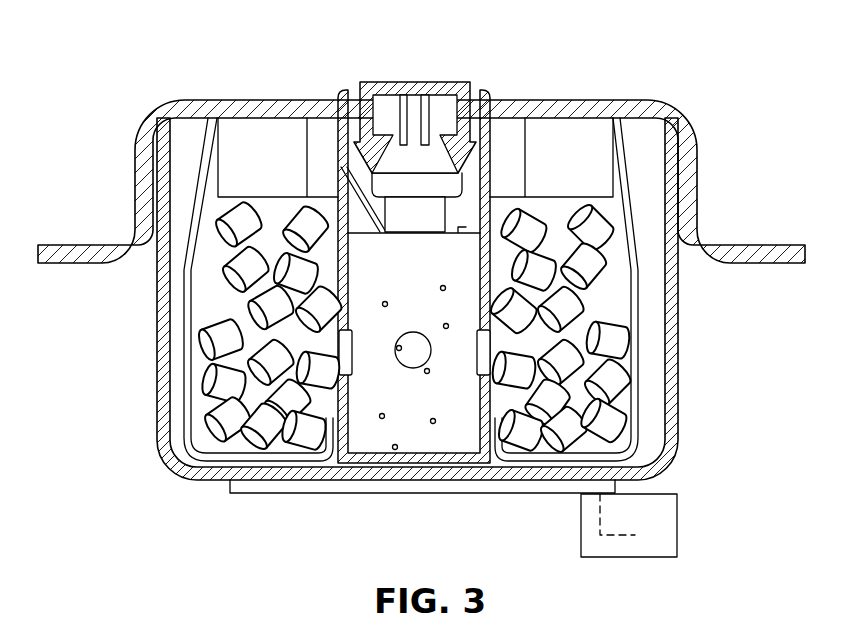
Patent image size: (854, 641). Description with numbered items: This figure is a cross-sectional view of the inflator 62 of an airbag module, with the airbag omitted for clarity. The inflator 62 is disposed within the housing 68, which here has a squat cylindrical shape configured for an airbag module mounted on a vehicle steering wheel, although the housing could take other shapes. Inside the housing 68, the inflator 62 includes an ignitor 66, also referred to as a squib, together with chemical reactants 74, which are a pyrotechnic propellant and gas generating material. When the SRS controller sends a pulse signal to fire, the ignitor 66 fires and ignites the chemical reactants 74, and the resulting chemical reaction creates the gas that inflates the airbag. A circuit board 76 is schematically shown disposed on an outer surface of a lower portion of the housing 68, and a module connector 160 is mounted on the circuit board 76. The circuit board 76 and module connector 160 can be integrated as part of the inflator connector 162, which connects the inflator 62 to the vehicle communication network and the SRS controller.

The inflator 62 is at (441, 247).
The ignitor 66 is at (404, 234).
The housing 68 is at (678, 393).
The chemical reactants 74 is at (215, 350).
The circuit board 76 is at (232, 494).
The module connector 160 is at (612, 556).
The inflator connector 162 is at (382, 102).